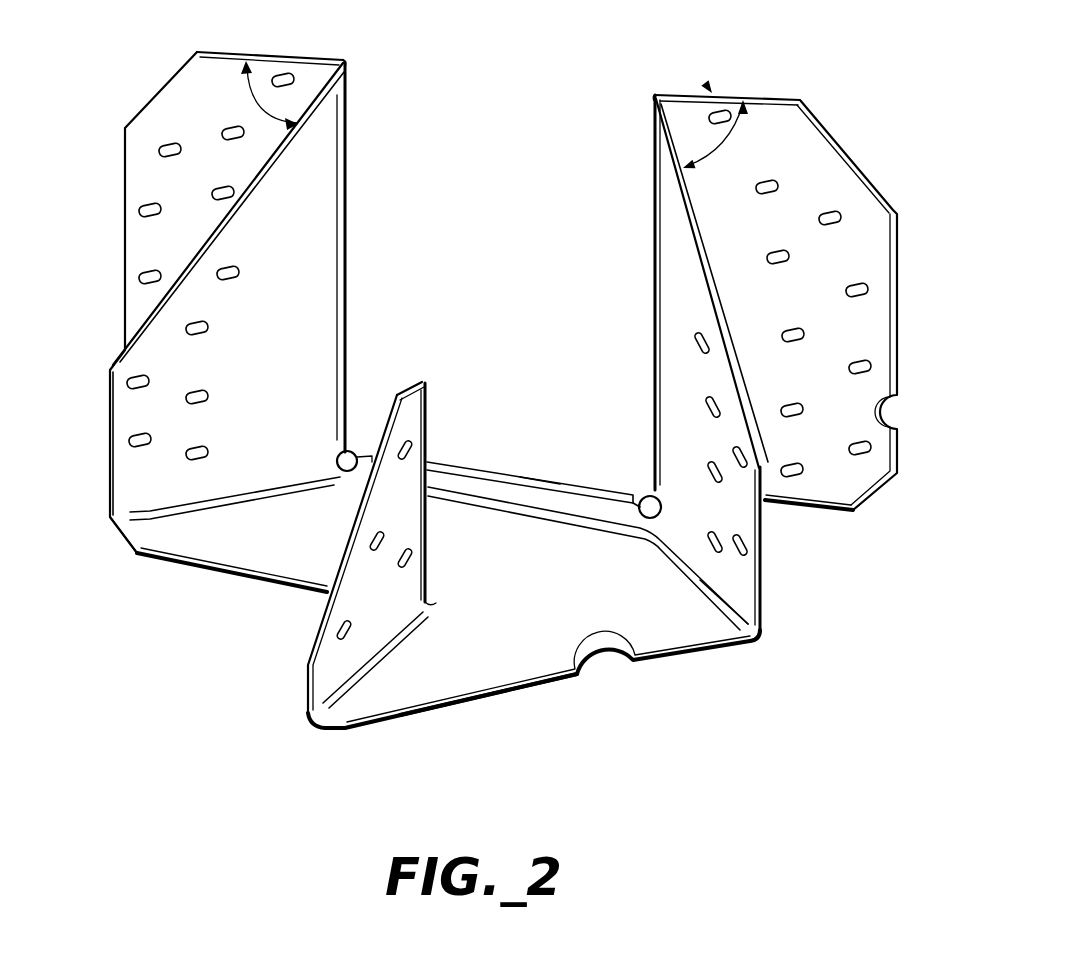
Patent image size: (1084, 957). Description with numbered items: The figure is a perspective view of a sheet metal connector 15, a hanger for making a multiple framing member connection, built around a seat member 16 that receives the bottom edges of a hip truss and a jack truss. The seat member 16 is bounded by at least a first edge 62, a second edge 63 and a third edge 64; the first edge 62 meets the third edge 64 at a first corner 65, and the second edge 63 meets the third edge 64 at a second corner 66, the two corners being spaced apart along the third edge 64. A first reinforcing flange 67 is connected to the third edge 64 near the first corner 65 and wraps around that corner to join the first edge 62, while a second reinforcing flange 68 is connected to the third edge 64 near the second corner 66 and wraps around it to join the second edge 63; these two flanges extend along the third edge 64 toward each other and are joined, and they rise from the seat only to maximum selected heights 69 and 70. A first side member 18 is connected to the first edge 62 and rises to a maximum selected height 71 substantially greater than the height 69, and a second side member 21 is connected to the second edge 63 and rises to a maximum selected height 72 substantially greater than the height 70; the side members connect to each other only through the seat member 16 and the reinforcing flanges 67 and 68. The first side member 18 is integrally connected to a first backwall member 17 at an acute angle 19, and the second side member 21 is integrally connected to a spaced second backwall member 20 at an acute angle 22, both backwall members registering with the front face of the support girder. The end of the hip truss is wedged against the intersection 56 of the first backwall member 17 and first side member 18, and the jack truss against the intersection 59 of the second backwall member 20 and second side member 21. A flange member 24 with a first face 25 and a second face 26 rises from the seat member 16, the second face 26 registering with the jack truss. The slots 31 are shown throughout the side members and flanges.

The sheet metal connector 15 is at (709, 89).
The seat member 16 is at (569, 626).
The first backwall member 17 is at (213, 52).
The first side member 18 is at (194, 258).
The acute angle 19 is at (252, 102).
The second backwall member 20 is at (780, 100).
The second side member 21 is at (710, 293).
The acute angle 22 is at (735, 147).
The flange member 24 is at (421, 383).
The first face 25 is at (313, 627).
The second face 26 is at (377, 628).
The fastener slots 31 is at (233, 133).
The intersection 56 is at (346, 155).
The intersection 59 is at (655, 240).
The first edge 62 is at (150, 513).
The second edge 63 is at (728, 613).
The third edge 64 is at (507, 507).
The first corner 65 is at (335, 481).
The second corner 66 is at (643, 537).
The first reinforcing flange 67 is at (353, 458).
The second reinforcing flange 68 is at (647, 503).
The maximum selected height 69 is at (443, 462).
The maximum selected height 70 is at (540, 478).
The maximum selected height 71 is at (344, 62).
The maximum selected height 72 is at (655, 96).